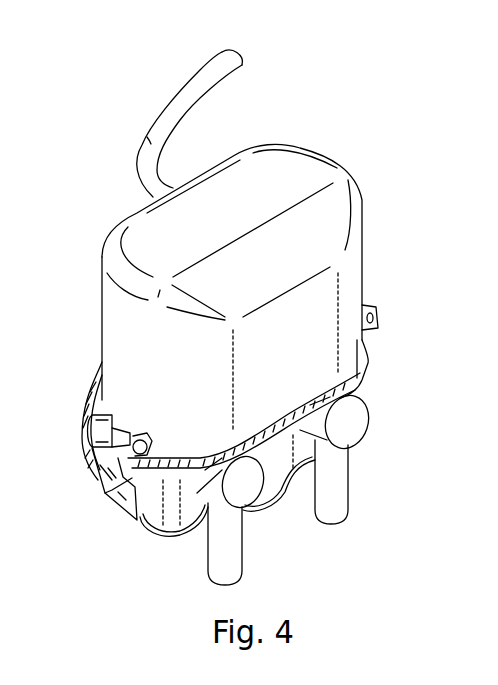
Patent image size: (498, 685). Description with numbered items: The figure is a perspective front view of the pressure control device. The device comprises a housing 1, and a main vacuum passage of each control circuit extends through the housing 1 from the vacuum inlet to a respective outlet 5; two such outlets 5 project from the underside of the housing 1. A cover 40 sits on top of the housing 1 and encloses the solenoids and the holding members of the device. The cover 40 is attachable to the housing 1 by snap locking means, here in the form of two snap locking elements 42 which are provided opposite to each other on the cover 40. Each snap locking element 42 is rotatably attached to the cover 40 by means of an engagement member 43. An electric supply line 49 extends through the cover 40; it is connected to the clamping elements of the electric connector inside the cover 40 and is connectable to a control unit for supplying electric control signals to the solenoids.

The housing 1 is at (152, 514).
The outlet 5 is at (220, 563).
The cover 40 is at (364, 257).
The snap locking element 42 is at (108, 496).
The engagement member 43 is at (364, 308).
The electric supply line 49 is at (210, 78).